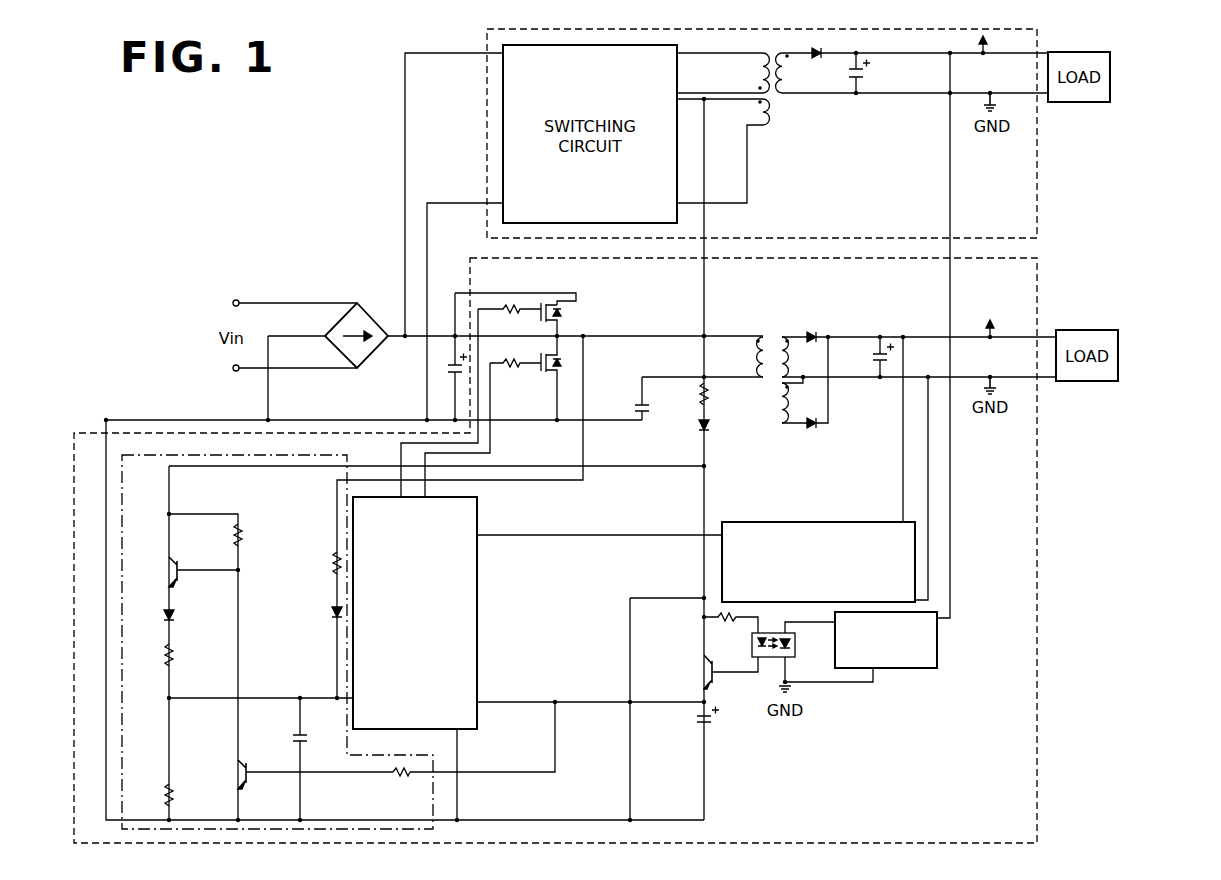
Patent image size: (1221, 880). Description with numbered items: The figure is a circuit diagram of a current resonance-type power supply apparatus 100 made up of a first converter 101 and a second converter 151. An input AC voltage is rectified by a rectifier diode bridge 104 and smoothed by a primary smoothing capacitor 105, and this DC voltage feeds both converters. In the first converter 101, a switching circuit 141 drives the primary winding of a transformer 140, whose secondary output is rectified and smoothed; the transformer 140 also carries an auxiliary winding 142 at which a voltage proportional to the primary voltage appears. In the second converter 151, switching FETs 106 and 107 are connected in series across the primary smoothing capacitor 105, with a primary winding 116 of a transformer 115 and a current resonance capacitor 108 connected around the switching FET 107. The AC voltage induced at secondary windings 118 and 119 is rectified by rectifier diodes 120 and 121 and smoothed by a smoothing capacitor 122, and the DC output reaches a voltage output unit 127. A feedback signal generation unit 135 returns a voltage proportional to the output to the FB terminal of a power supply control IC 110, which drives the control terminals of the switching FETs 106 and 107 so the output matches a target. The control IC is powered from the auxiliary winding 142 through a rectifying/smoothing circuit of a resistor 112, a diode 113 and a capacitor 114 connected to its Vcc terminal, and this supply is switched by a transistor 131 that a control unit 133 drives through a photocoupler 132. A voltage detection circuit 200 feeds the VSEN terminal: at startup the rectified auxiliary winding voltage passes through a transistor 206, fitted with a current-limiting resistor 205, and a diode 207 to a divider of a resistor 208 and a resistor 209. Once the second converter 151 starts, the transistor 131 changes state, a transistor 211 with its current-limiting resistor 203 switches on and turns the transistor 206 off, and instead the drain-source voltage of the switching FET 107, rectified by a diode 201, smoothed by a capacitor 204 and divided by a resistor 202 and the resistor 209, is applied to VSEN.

The power supply apparatus 100 is at (1127, 78).
The first converter 101 is at (1042, 145).
The rectifier diode bridge 104 is at (378, 305).
The primary smoothing capacitor 105 is at (446, 365).
The switching FET 106 is at (538, 300).
The switching FET 107 is at (539, 372).
The current resonance capacitor 108 is at (640, 400).
The power supply control IC 110 is at (478, 667).
The resistor 112 is at (713, 397).
The diode 113 is at (695, 425).
The capacitor 114 is at (697, 718).
The transformer 115 is at (765, 357).
The primary winding 116 is at (755, 355).
The secondary winding 118 is at (780, 335).
The secondary winding 119 is at (795, 403).
The rectifier diode 120 is at (812, 331).
The rectifier diode 121 is at (815, 430).
The smoothing capacitor 122 is at (878, 340).
The voltage output unit 127 is at (993, 330).
The transistor 131 is at (703, 672).
The photocoupler 132 is at (771, 658).
The control unit 133 is at (920, 670).
The feedback signal generation unit 135 is at (771, 520).
The transformer 140 is at (754, 107).
The switching circuit 141 is at (680, 70).
The auxiliary winding 142 is at (772, 93).
The second converter 151 is at (1043, 290).
The voltage detection circuit 200 is at (435, 826).
The diode 201 is at (331, 612).
The resistor 202 is at (330, 565).
The current-limiting resistor 203 is at (397, 778).
The capacitor 204 is at (297, 738).
The current-limiting resistor 205 is at (245, 528).
The transistor 206 is at (177, 571).
The diode 207 is at (177, 618).
The resistor 208 is at (168, 658).
The resistor 209 is at (168, 790).
The transistor 211 is at (240, 770).